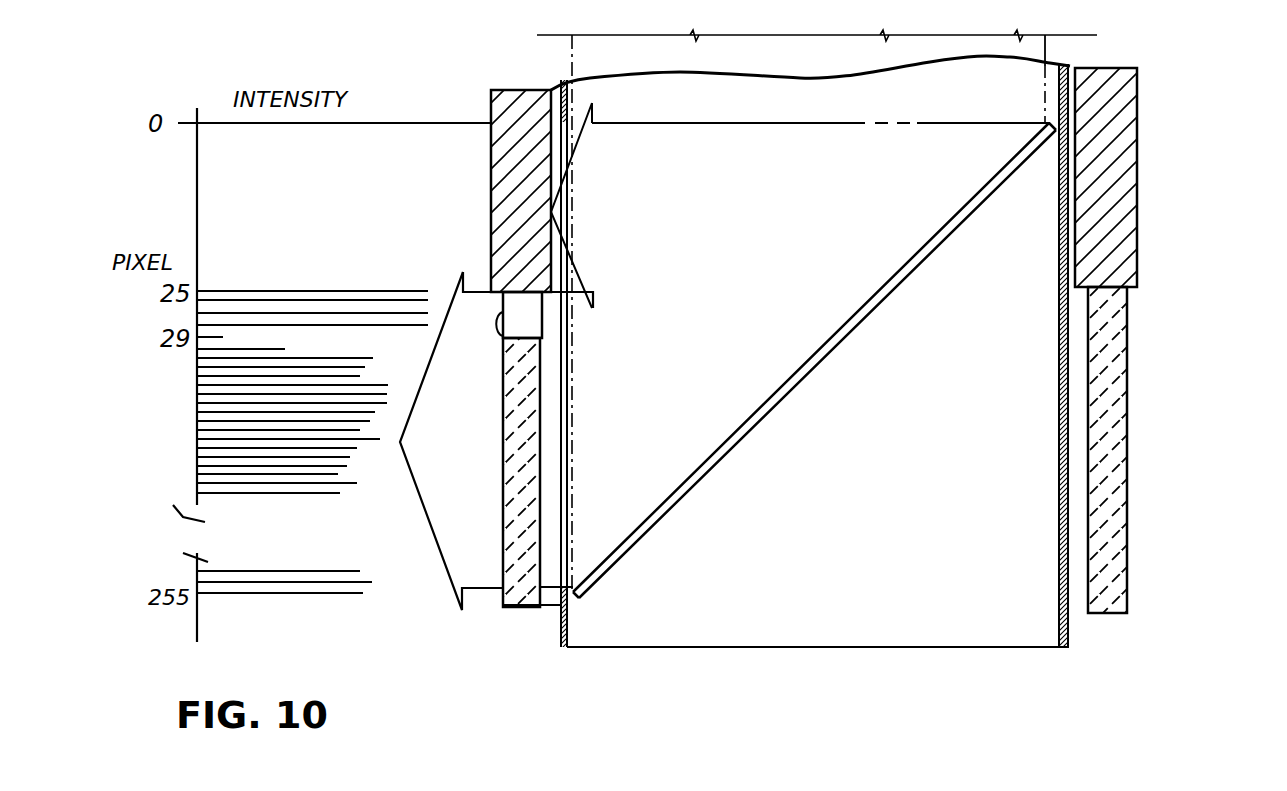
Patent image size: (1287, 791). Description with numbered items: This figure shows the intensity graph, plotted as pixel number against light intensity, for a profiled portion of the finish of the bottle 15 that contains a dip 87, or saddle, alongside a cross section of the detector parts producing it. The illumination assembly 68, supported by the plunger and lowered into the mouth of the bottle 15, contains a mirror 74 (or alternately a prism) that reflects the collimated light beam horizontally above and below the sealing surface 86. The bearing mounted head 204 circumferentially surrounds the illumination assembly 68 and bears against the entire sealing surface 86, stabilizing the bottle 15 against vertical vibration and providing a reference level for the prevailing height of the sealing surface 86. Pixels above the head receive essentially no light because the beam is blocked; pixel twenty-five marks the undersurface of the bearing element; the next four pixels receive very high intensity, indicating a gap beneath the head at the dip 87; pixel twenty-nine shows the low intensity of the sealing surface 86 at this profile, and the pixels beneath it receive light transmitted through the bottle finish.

The bottle 15 is at (503, 498).
The illumination assembly 68 is at (1058, 408).
The mirror 74 is at (797, 377).
The sealing surface 86 is at (487, 303).
The dip 87 is at (542, 334).
The bearing mounted head 204 is at (1125, 154).